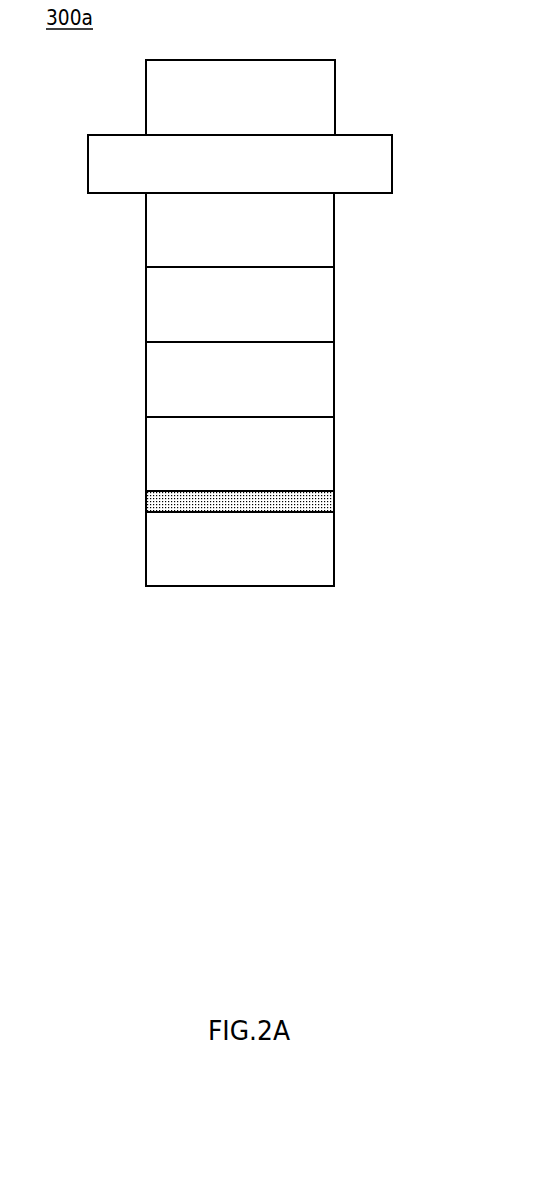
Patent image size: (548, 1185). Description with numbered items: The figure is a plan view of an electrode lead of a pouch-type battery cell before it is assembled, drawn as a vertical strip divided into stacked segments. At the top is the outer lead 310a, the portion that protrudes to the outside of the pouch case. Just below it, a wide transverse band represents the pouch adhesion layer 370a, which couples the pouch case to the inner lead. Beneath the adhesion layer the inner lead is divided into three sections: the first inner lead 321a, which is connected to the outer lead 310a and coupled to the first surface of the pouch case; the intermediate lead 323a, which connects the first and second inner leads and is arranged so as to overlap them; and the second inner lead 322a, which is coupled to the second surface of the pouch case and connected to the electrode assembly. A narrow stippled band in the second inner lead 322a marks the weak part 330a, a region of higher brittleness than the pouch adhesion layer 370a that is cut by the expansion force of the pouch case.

The outer lead 310a is at (327, 99).
The pouch adhesion layer 370a is at (384, 163).
The first inner lead 321a is at (327, 305).
The intermediate lead 323a is at (327, 380).
The second inner lead 322a is at (327, 457).
The weak part 330a is at (327, 502).